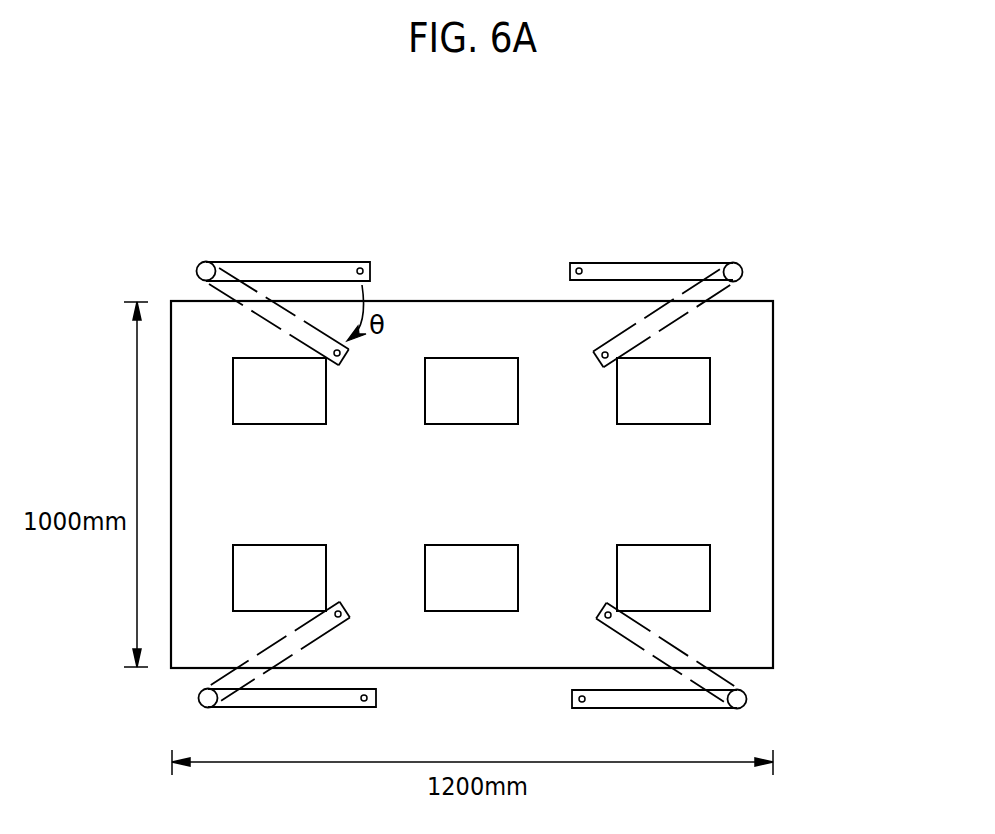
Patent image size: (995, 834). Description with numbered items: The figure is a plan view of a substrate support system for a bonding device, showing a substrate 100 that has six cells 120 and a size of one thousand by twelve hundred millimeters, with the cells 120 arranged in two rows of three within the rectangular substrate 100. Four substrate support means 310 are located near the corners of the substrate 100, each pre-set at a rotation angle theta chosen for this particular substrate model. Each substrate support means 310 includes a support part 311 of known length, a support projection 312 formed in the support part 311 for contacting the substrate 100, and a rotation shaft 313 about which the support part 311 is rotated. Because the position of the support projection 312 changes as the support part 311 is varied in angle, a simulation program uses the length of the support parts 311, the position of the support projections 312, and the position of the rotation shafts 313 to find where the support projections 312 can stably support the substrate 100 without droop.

The substrate 100 is at (780, 526).
The cell 120 is at (693, 390).
The substrate support means 310 is at (656, 261).
The support part 311 is at (662, 267).
The support projection 312 is at (579, 267).
The rotation shaft 313 is at (738, 247).